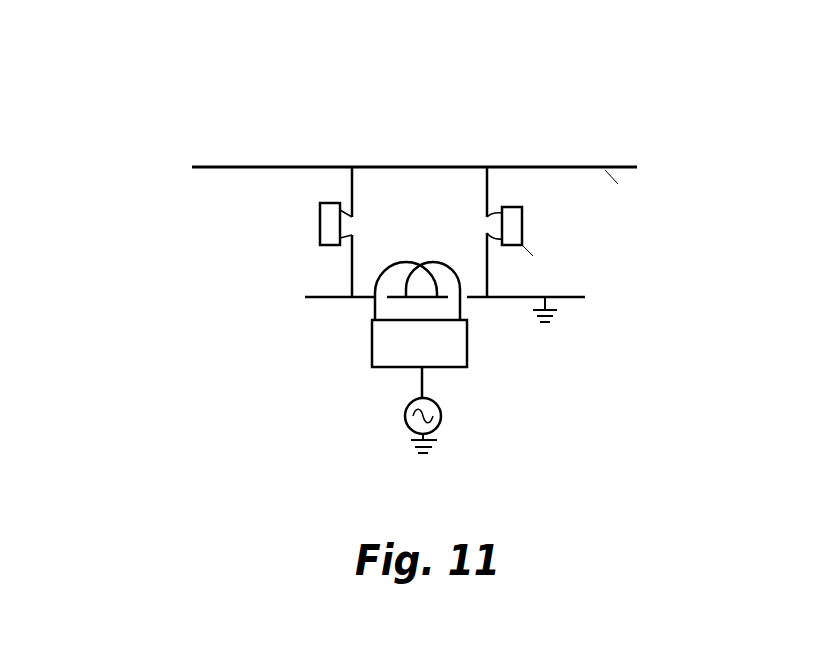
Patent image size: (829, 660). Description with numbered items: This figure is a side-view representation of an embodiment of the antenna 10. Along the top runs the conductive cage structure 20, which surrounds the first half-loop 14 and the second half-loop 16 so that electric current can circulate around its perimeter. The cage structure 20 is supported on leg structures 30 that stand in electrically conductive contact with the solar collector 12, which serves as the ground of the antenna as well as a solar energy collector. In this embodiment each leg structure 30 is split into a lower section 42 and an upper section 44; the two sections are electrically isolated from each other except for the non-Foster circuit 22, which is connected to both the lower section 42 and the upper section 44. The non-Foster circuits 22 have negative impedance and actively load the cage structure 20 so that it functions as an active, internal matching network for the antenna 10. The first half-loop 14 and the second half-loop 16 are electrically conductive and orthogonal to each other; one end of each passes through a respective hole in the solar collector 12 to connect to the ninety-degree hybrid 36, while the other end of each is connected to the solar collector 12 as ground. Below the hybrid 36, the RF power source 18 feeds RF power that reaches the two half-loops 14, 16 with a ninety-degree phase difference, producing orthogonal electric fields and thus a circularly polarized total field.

The antenna 10 is at (122, 84).
The solar collector 12 is at (584, 297).
The first half-loop 14 is at (440, 262).
The second half-loop 16 is at (403, 262).
The RF power source 18 is at (441, 412).
The conductive cage structure 20 is at (508, 167).
The non-Foster circuit 22 is at (320, 233).
The leg structure 30 is at (487, 182).
The 90° hybrid 36 is at (372, 328).
The lower section 42 is at (352, 282).
The upper section 44 is at (352, 180).